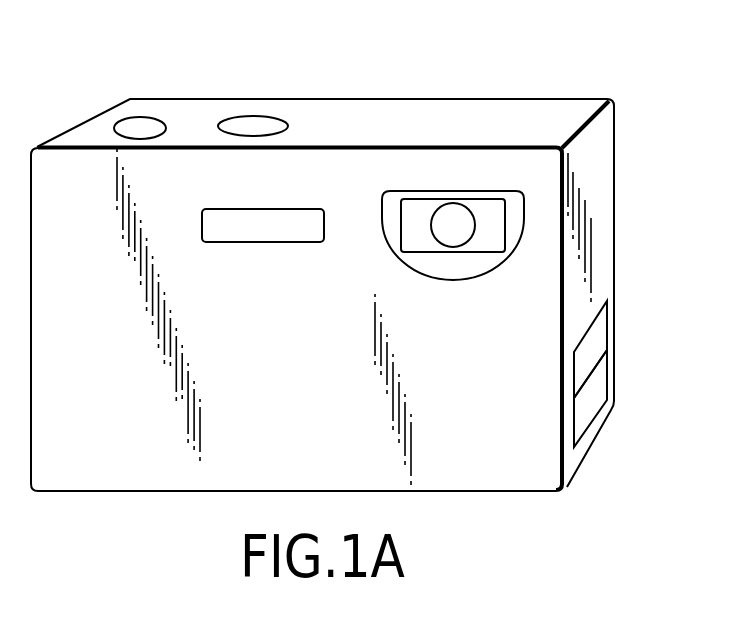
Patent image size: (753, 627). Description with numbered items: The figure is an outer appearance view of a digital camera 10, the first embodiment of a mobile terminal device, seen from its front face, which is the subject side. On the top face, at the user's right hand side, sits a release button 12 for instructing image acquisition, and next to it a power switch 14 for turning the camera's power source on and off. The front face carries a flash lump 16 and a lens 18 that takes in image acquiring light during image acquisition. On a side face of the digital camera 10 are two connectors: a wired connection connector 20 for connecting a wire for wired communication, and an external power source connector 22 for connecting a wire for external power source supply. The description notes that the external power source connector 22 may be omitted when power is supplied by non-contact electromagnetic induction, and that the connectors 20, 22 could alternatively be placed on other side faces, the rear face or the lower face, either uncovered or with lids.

The digital camera 10 is at (578, 98).
The release button 12 is at (138, 117).
The power switch 14 is at (245, 115).
The flash lump 16 is at (282, 210).
The lens 18 is at (461, 191).
The wired connection connector 20 is at (597, 338).
The external power source connector 22 is at (597, 389).